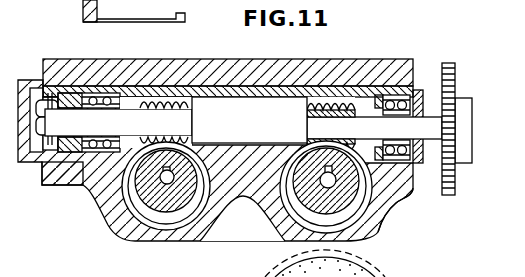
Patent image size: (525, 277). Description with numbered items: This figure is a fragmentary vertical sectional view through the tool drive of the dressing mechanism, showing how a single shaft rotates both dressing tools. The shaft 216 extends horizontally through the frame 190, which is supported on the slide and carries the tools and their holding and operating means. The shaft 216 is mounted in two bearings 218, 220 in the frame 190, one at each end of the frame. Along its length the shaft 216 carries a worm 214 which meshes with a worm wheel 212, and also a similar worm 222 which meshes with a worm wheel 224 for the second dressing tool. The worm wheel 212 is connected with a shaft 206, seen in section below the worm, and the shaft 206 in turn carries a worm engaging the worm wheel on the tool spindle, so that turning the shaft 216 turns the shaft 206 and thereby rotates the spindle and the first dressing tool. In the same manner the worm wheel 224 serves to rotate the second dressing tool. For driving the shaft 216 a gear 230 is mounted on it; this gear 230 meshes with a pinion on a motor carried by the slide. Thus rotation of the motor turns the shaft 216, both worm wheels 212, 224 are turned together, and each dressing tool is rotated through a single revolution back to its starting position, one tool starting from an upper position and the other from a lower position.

The frame 190 is at (366, 72).
The shaft 206 is at (166, 186).
The worm wheel 212 is at (184, 200).
The worm 214 is at (163, 84).
The shaft 216 is at (233, 115).
The bearing 218 is at (82, 186).
The bearing 220 is at (408, 190).
The worm 222 is at (315, 100).
The worm wheel 224 is at (353, 202).
The gear 230 is at (447, 63).